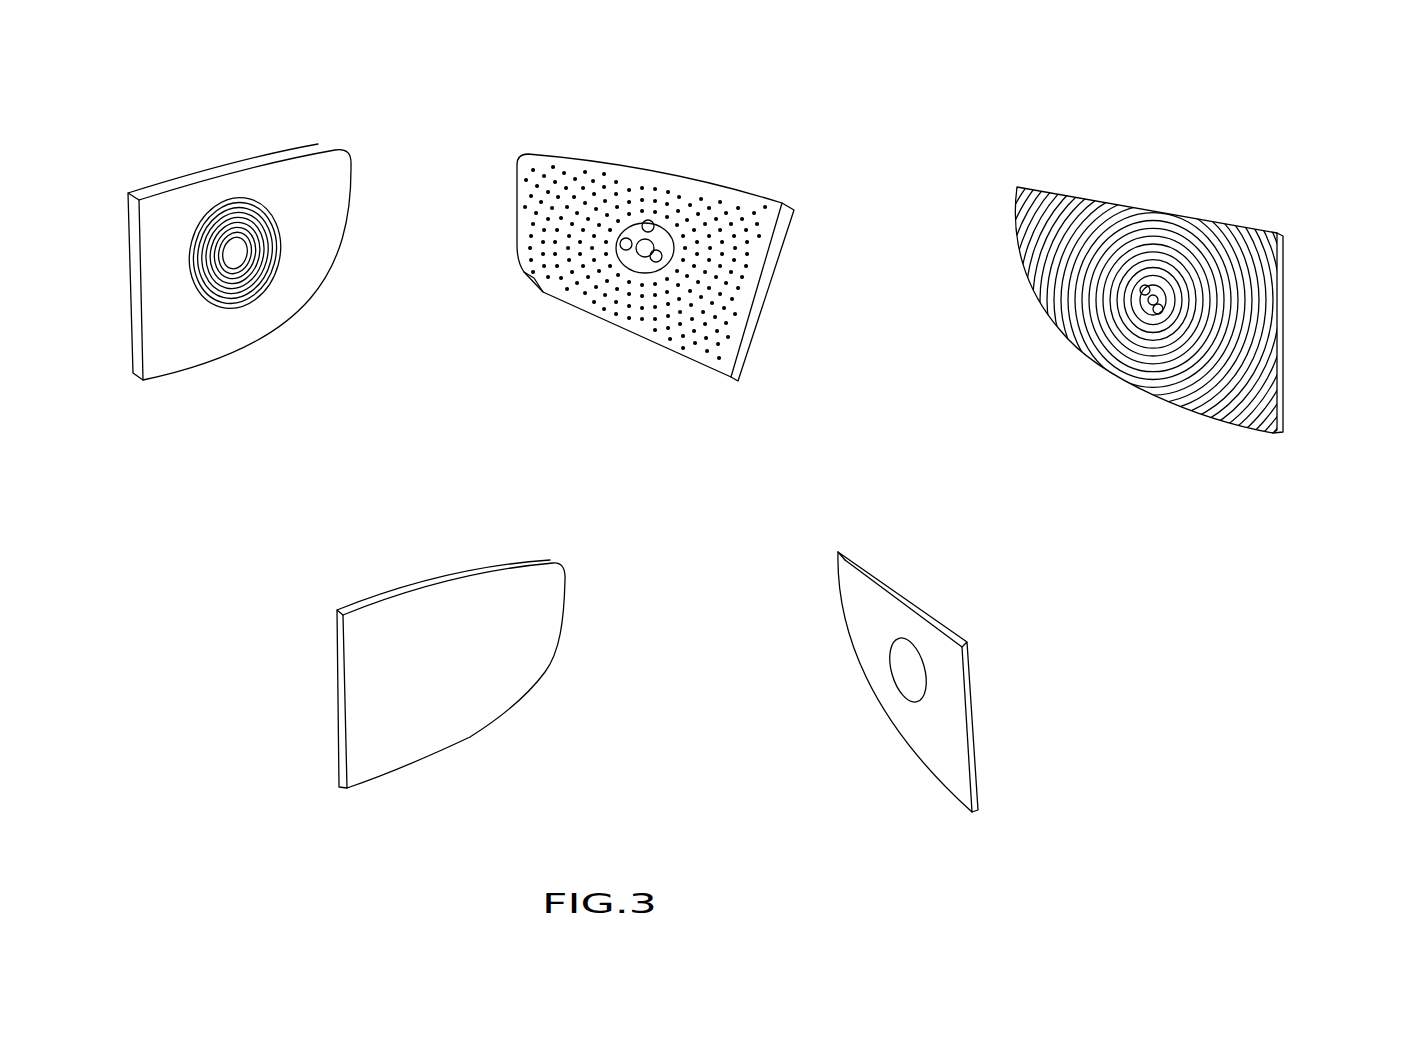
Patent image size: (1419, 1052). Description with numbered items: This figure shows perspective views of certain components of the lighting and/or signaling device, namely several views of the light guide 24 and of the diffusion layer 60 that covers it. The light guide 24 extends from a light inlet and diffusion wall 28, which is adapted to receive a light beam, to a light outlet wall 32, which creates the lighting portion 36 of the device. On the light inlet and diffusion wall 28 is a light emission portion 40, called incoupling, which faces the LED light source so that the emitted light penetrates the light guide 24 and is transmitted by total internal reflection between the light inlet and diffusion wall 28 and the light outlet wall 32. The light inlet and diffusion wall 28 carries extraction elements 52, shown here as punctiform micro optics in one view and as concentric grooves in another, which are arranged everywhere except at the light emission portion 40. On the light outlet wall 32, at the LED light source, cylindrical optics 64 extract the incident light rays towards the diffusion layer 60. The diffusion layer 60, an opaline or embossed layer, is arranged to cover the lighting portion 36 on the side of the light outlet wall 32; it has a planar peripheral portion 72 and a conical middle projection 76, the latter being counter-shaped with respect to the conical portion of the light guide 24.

The light guide 24 is at (298, 152).
The light inlet and diffusion wall 28 is at (683, 276).
The light outlet wall 32 is at (770, 291).
The lighting portion 36 is at (304, 252).
The light emission portion 40 is at (667, 227).
The extraction elements 52 is at (750, 273).
The diffusion layer 60 is at (373, 678).
The cylindrical optics 64 is at (228, 308).
The planar peripheral portion 72 is at (872, 615).
The conical middle projection 76 is at (910, 692).